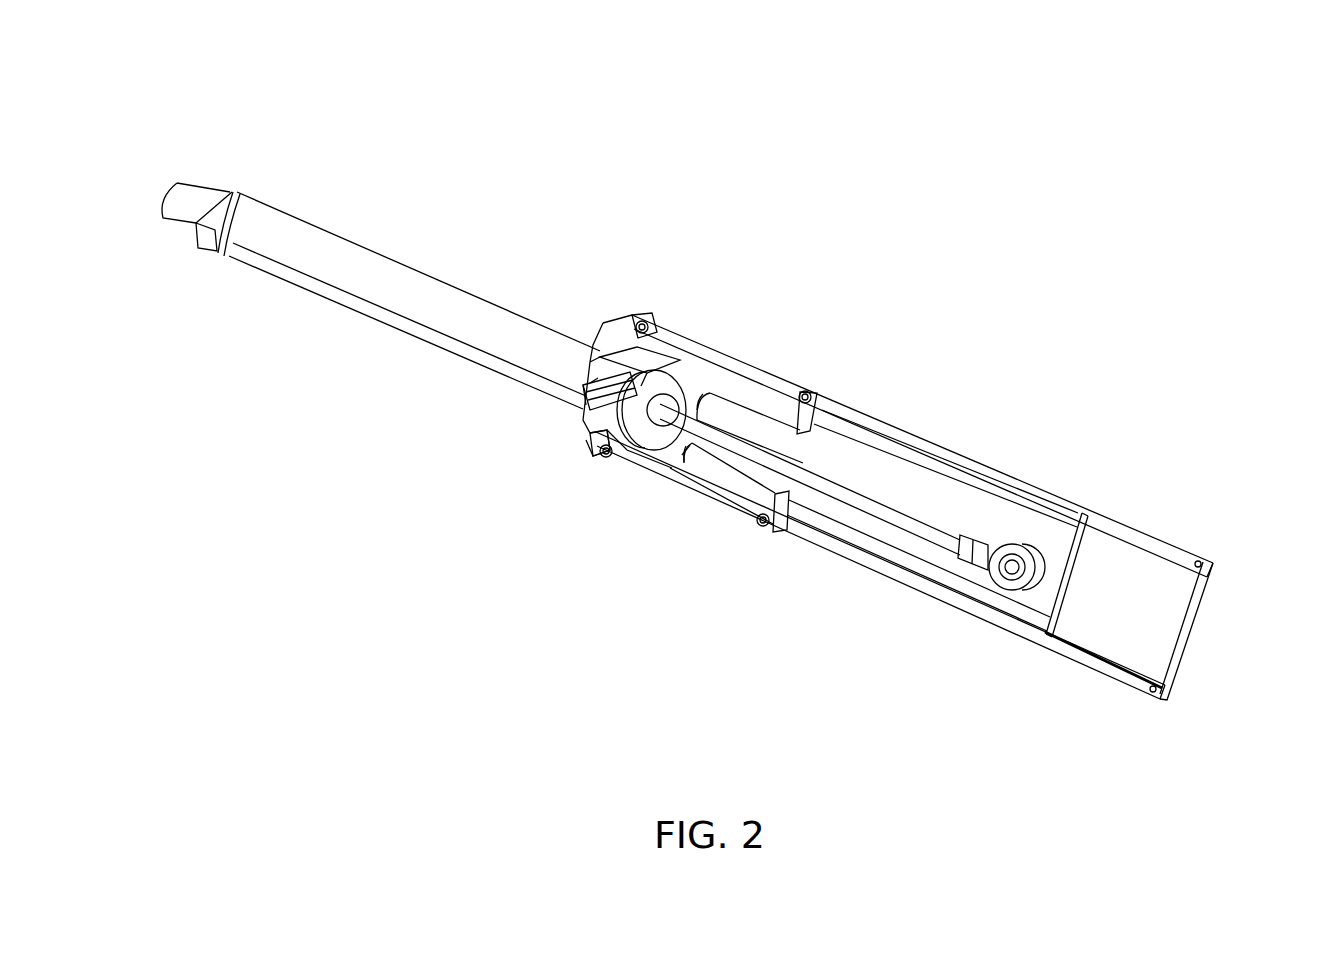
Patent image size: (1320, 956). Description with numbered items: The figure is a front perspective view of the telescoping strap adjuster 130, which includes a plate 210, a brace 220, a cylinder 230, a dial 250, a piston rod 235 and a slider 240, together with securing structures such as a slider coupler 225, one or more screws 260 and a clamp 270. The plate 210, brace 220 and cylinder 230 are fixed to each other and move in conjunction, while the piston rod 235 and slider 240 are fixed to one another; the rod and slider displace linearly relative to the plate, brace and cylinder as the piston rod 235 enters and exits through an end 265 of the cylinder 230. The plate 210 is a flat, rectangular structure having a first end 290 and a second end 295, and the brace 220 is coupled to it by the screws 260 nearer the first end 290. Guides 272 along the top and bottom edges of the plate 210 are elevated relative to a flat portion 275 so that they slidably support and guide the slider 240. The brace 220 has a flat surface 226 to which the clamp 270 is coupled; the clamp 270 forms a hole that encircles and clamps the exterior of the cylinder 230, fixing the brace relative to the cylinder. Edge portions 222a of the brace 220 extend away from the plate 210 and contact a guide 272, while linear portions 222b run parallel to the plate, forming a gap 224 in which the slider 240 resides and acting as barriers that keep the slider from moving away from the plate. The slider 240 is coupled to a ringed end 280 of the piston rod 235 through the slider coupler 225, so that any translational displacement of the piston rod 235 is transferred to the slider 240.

The telescoping strap adjuster 130 is at (160, 62).
The plate 210 is at (938, 550).
The brace 220 is at (685, 483).
The edge portions 222a is at (822, 402).
The linear portions 222b is at (807, 433).
The gap 224 is at (823, 423).
The slider coupler 225 is at (1017, 580).
The flat surface 226 is at (683, 457).
The cylinder 230 is at (405, 288).
The piston rod 235 is at (897, 523).
The slider 240 is at (987, 513).
The dial 250 is at (215, 212).
The screws 260 is at (652, 323).
The end of the cylinder 265 is at (668, 402).
The clamp 270 is at (603, 400).
The guides 272 is at (1162, 548).
The flat portion 275 is at (1173, 620).
The ringed end 280 is at (1040, 557).
The first end 290 is at (625, 347).
The second end 295 is at (1197, 602).